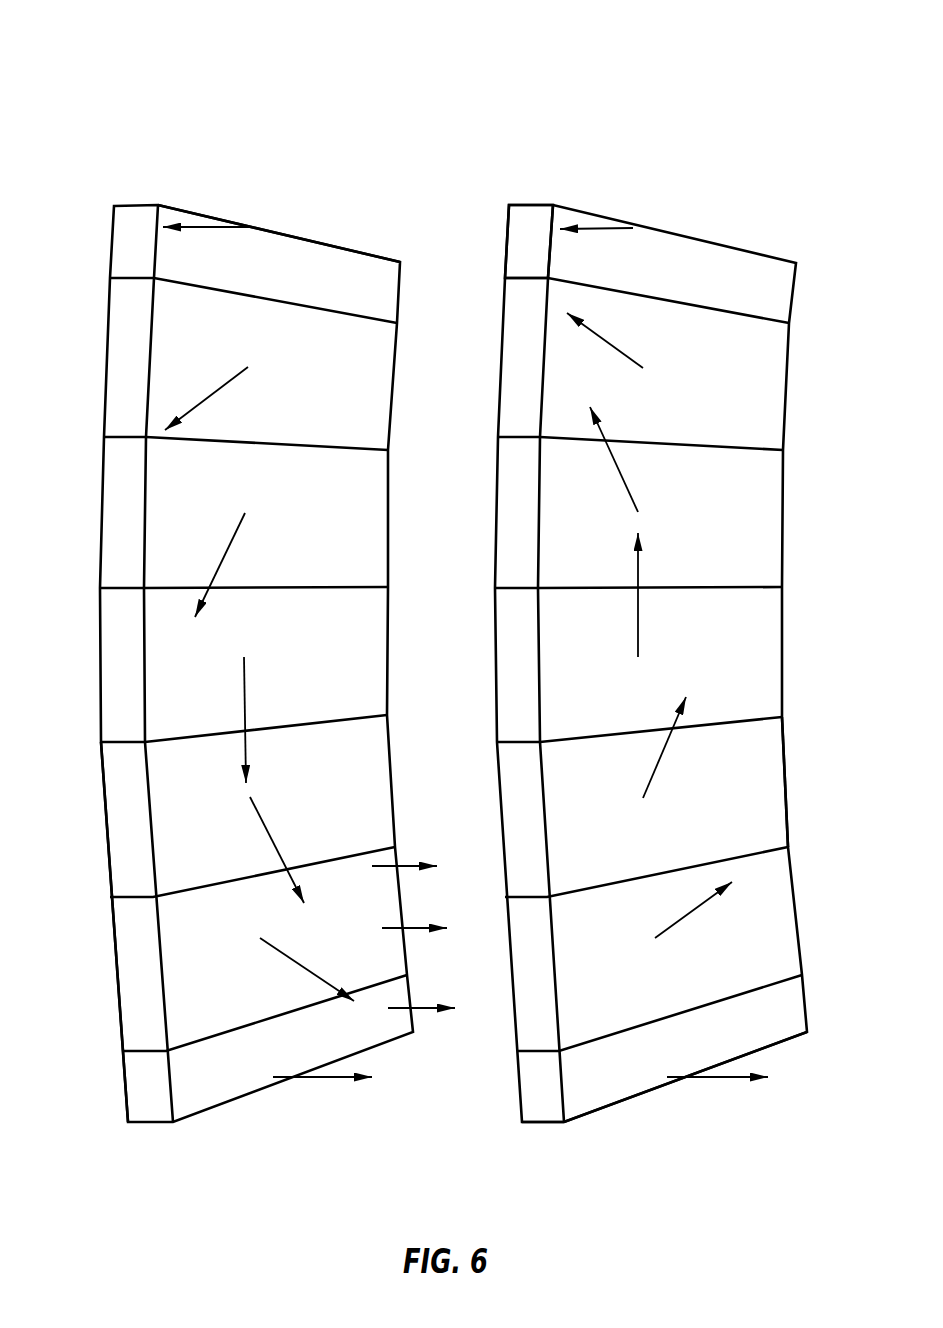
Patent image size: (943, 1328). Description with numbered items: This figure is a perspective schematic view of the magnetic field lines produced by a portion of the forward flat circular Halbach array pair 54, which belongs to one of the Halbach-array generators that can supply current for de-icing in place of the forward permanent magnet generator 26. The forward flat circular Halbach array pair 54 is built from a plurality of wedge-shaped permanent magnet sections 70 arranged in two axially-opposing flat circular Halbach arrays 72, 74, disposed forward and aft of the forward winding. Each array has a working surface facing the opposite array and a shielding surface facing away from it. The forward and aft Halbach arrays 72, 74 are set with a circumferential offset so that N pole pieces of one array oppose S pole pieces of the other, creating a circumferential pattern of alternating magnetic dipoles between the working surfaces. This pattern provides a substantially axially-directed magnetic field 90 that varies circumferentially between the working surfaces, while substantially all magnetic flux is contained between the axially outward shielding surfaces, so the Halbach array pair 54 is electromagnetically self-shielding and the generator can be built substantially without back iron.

The forward permanent magnet (PM) generator 26 is at (157, 95).
The forward flat circular Halbach array pair 54 is at (328, 107).
The wedge-shaped permanent magnet sections 70 is at (128, 247).
The forward flat circular Halbach array 72 is at (300, 213).
The aft flat circular Halbach array 74 is at (758, 222).
The axially-directed magnetic field 90 is at (422, 1013).